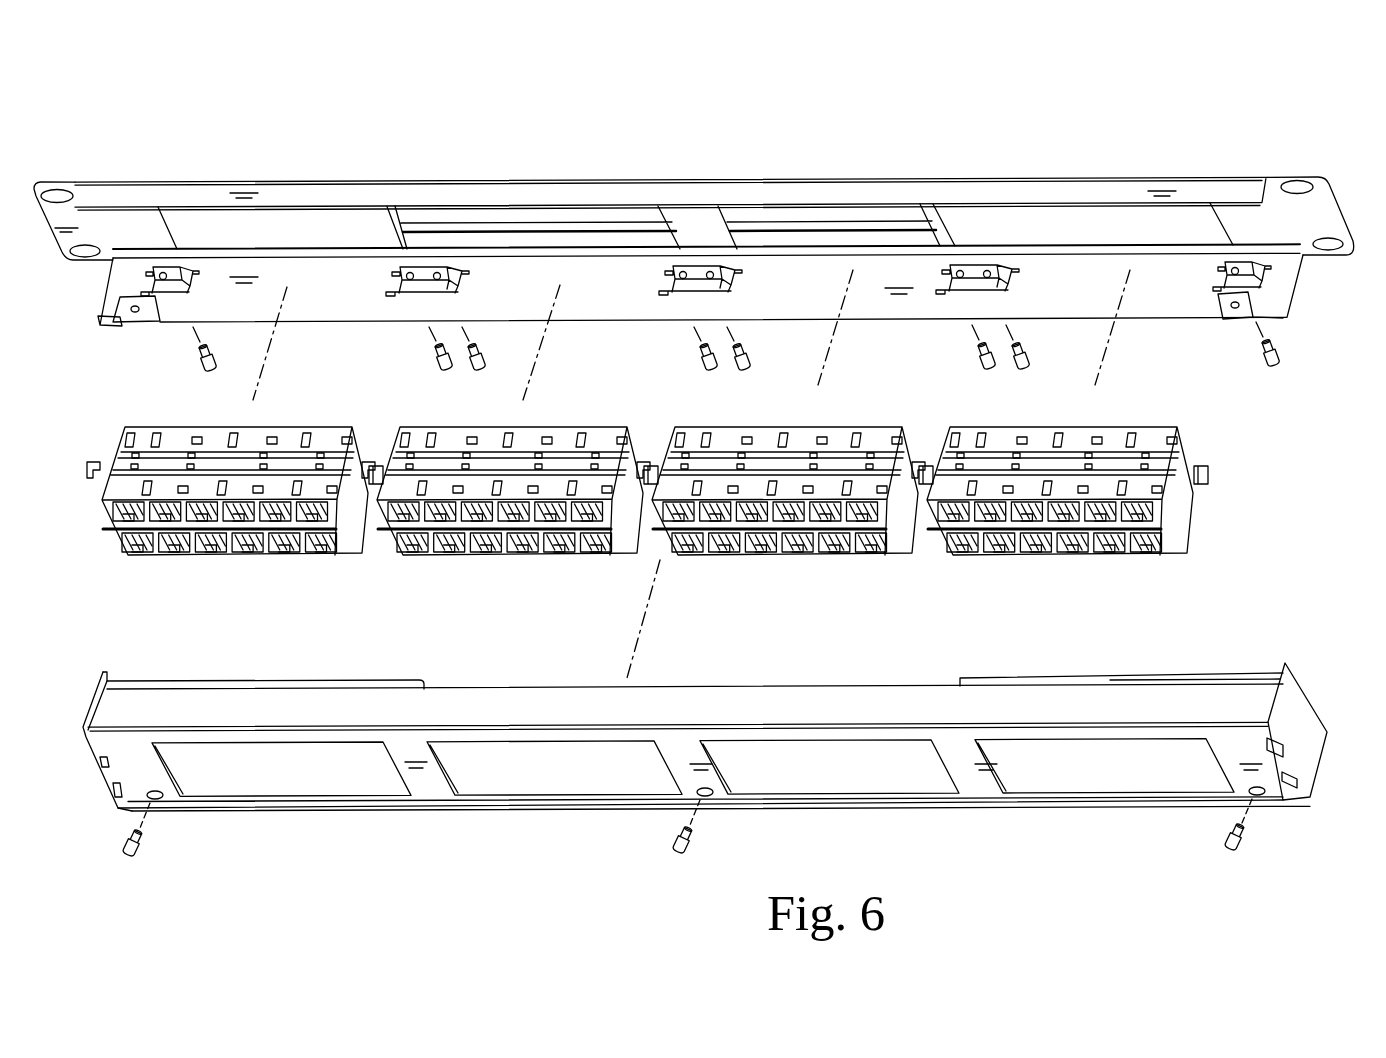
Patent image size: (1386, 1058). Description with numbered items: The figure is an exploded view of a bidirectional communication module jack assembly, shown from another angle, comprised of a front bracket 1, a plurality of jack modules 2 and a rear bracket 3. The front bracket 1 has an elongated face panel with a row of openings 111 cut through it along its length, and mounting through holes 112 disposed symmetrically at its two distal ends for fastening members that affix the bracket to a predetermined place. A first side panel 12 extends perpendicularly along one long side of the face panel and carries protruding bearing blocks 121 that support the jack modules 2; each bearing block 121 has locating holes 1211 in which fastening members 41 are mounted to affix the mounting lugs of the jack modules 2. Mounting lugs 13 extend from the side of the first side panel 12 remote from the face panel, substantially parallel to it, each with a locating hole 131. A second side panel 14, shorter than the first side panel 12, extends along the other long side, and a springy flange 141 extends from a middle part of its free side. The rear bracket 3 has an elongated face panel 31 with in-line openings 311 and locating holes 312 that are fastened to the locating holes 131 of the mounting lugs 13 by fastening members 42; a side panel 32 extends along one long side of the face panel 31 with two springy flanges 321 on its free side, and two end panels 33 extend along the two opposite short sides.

The front bracket 1 is at (636, 337).
The first side panel 12 is at (313, 323).
The mounting lug 13 is at (104, 321).
The second side panel 14 is at (1097, 181).
The fastening member 41 is at (990, 368).
The fastening member 42 is at (138, 851).
The opening 111 is at (292, 249).
The mounting through hole 112 is at (55, 189).
The bearing block 121 is at (176, 267).
The locating hole 131 is at (136, 313).
The springy flange 141 is at (594, 232).
The locating hole 1211 is at (163, 271).
The jack module 2 is at (258, 566).
The rear bracket 3 is at (889, 815).
The face panel 31 is at (585, 810).
The side panel 32 is at (518, 688).
The end panel 33 is at (105, 668).
The opening 311 is at (264, 792).
The locating hole 312 is at (143, 798).
The springy flange 321 is at (298, 680).